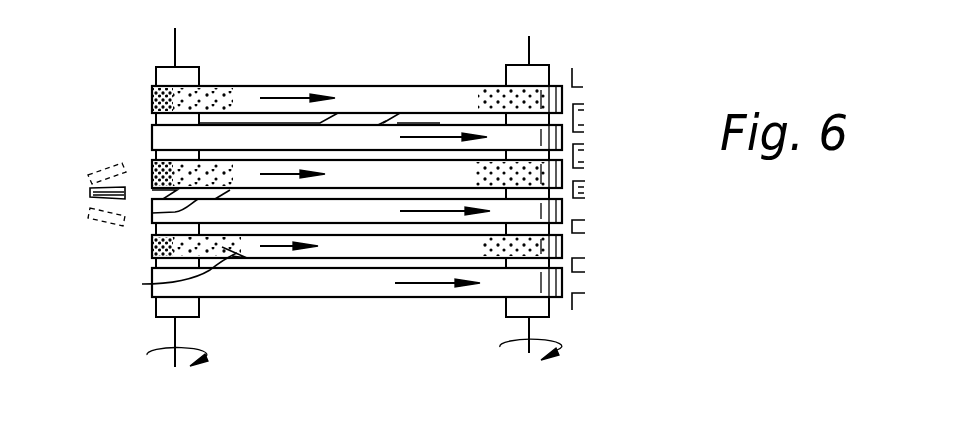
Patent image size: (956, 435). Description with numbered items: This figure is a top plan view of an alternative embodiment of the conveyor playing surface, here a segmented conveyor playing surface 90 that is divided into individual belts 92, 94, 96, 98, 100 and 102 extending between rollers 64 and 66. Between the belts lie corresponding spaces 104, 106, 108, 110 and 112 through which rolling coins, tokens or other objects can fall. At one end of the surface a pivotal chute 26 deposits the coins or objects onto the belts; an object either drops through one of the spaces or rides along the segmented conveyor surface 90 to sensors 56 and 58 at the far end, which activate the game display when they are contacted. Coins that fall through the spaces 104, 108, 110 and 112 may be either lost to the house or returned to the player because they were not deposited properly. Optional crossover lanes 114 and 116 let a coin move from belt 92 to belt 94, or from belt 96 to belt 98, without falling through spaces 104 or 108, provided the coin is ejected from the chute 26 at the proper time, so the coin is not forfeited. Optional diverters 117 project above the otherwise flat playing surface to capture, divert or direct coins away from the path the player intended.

The pivotal chute 26 is at (90, 192).
The sensor 56 is at (582, 77).
The sensor 58 is at (584, 104).
The roller 64 is at (199, 308).
The roller 66 is at (549, 308).
The segmented conveyor playing surface 90 is at (370, 127).
The belt 92 is at (152, 102).
The belt 94 is at (152, 135).
The belt 96 is at (383, 121).
The belt 98 is at (400, 113).
The belt 100 is at (337, 248).
The belt 102 is at (352, 278).
The space 104 is at (467, 120).
The space 106 is at (265, 160).
The space 108 is at (570, 212).
The space 110 is at (570, 245).
The space 112 is at (420, 268).
The crossover lane 114 is at (353, 127).
The crossover lane 116 is at (152, 213).
The diverter 117 is at (142, 284).